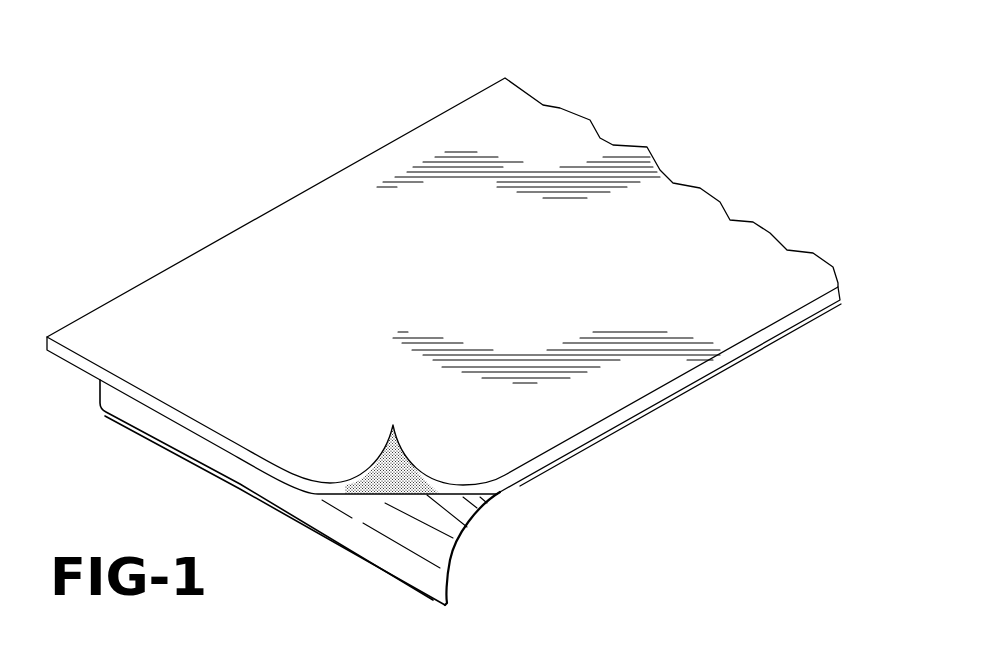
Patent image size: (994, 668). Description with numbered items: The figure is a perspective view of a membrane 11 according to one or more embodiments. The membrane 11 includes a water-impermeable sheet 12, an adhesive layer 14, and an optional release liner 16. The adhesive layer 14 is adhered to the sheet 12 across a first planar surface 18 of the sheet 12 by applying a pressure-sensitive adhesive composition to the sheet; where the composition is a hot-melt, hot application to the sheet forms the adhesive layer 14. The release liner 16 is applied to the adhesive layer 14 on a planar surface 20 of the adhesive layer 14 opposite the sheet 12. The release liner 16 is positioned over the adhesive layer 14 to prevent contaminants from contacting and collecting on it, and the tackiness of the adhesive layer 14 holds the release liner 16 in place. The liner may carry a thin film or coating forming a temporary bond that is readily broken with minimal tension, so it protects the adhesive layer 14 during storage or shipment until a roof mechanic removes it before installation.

The membrane 11 is at (717, 137).
The water-impermeable sheet 12 is at (553, 137).
The adhesive layer 14 is at (380, 490).
The release liner 16 is at (430, 606).
The first planar surface 18 is at (403, 468).
The planar surface 20 is at (467, 522).